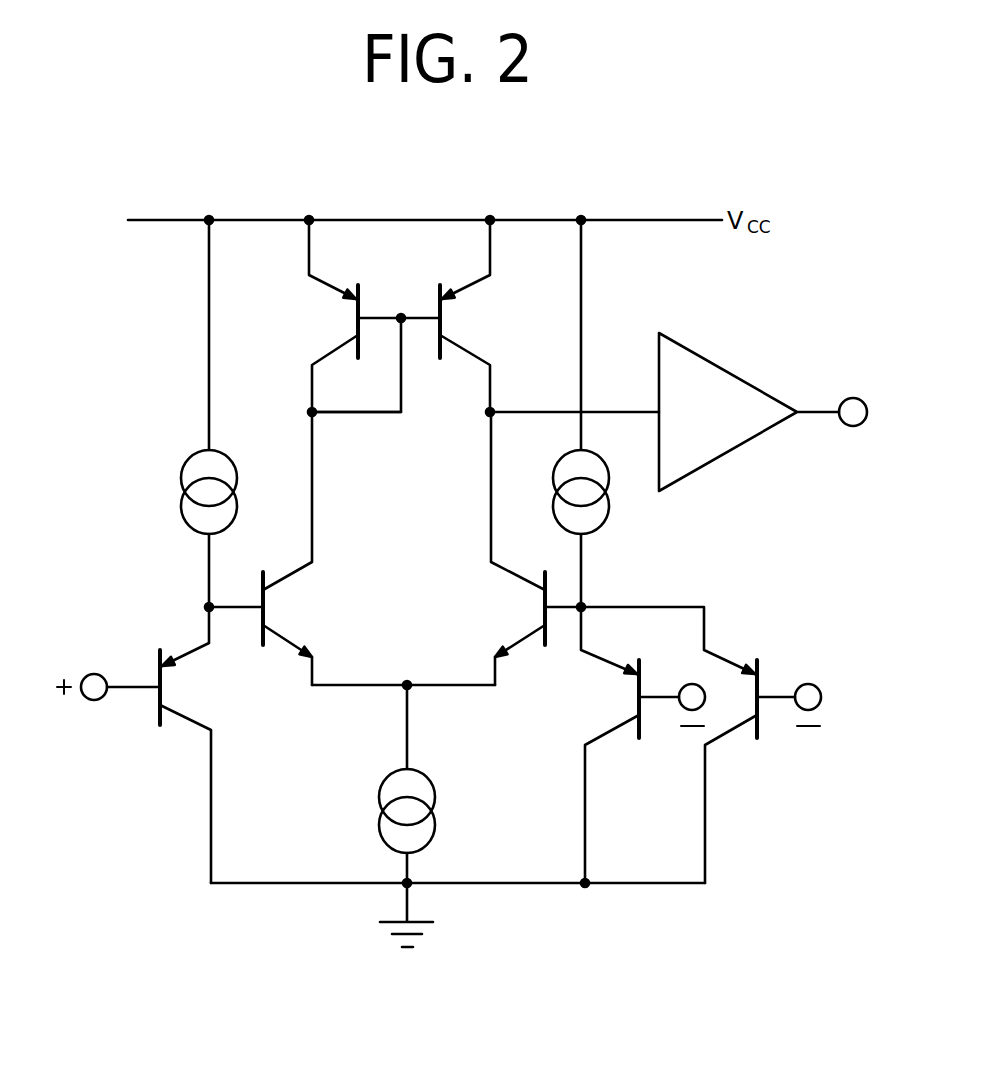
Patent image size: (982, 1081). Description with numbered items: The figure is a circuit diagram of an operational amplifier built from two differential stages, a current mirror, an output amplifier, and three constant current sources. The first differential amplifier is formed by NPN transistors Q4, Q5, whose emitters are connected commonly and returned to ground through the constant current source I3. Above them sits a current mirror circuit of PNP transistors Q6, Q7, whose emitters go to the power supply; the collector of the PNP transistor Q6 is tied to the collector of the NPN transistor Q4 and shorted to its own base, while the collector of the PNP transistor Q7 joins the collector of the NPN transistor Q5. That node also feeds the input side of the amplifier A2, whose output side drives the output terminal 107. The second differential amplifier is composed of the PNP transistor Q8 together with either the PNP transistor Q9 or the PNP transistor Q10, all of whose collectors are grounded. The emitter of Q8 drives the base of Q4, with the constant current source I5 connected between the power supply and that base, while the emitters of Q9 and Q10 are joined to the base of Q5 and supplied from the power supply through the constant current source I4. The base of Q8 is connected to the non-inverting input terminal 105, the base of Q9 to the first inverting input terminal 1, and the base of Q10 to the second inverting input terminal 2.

The first inverting input terminal 1 is at (689, 684).
The second inverting input terminal 2 is at (809, 684).
The non-inverting input terminal 105 is at (94, 700).
The output terminal 107 is at (855, 396).
The NPN transistor Q4 is at (272, 605).
The NPN transistor Q5 is at (535, 610).
The PNP transistor Q6 is at (350, 318).
The PNP transistor Q7 is at (448, 323).
The PNP transistor Q8 is at (170, 690).
The PNP transistor Q9 is at (630, 697).
The PNP transistor Q10 is at (748, 697).
The amplifier A2 is at (749, 412).
The constant current source I3 is at (363, 775).
The constant current source I4 is at (542, 452).
The constant current source I5 is at (167, 452).